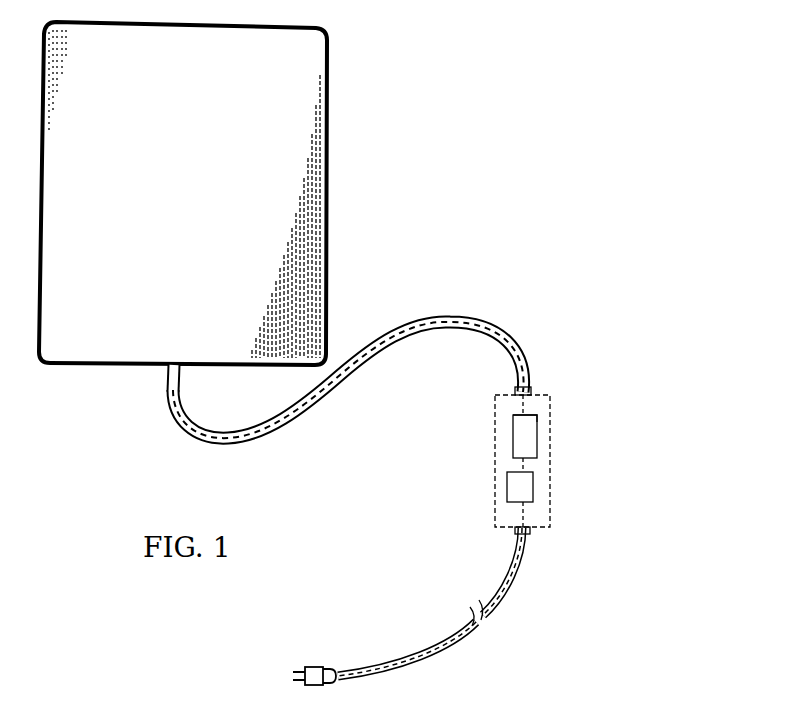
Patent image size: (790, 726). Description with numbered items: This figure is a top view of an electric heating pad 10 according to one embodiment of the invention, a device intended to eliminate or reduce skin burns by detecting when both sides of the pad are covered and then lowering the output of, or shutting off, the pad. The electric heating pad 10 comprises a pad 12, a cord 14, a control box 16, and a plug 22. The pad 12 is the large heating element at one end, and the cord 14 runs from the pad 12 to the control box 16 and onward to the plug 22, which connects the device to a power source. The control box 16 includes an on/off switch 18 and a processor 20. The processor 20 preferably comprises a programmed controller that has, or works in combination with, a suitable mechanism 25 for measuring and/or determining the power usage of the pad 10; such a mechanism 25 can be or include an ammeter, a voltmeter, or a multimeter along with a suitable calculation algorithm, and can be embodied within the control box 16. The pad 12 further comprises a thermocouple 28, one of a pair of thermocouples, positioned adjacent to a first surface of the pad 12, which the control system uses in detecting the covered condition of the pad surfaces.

The electric heating pad 10 is at (352, 52).
The pad 12 is at (298, 127).
The cord 14 is at (450, 318).
The control box 16 is at (540, 405).
The on/off switch 18 is at (517, 495).
The processor 20 is at (526, 452).
The plug 22 is at (312, 667).
The mechanism for measuring and/or determining a power usage 25 is at (513, 420).
The thermocouple 28 is at (135, 363).